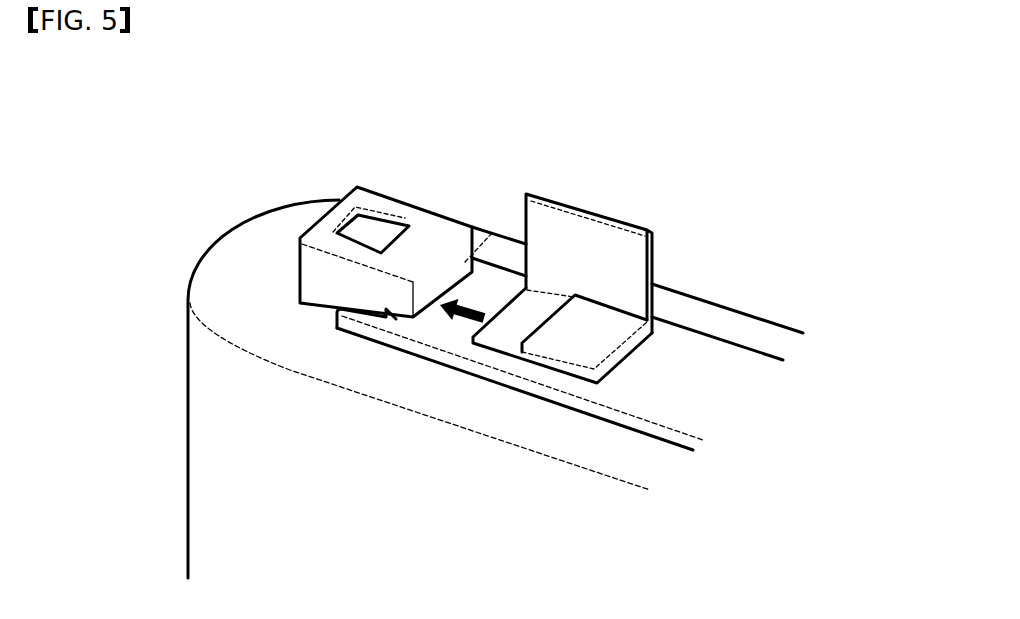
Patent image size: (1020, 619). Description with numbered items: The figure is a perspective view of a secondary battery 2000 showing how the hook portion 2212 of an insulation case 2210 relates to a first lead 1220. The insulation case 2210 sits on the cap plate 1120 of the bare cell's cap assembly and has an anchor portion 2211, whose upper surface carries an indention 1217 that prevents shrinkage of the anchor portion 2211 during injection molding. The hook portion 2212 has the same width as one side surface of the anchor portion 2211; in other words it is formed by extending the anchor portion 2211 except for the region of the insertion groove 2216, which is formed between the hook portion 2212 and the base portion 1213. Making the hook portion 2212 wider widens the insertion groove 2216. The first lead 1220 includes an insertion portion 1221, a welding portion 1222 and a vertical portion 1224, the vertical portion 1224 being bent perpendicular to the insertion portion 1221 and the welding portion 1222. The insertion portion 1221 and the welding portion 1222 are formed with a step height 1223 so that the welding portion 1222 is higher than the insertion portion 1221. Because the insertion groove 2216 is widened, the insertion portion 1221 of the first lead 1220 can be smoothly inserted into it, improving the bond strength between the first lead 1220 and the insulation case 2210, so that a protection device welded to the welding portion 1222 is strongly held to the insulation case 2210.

The secondary battery 2000 is at (766, 123).
The cap plate 1120 is at (232, 272).
The insulation case 2210 is at (268, 222).
The anchor portion 2211 is at (331, 208).
The indention 1217 is at (373, 215).
The hook portion 2212 is at (492, 205).
The vertical portion 1224 is at (595, 240).
The first lead 1220 is at (684, 226).
The insertion groove 2216 is at (389, 338).
The insertion portion 1221 is at (528, 327).
The step height 1223 is at (504, 347).
The base portion 1213 is at (663, 407).
The welding portion 1222 is at (593, 336).